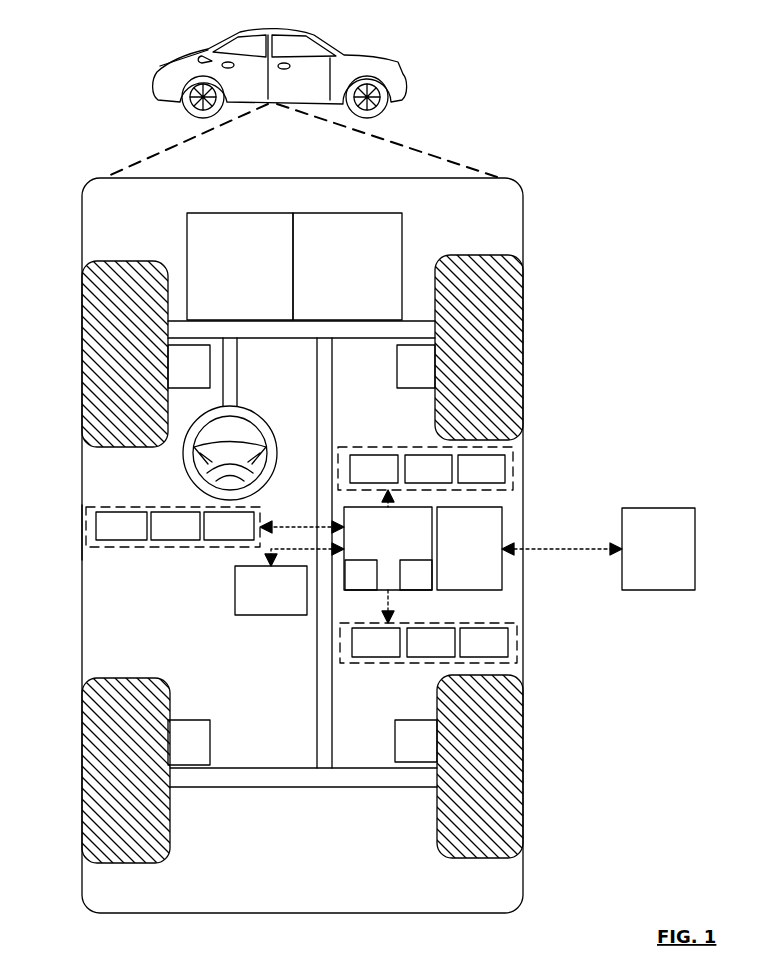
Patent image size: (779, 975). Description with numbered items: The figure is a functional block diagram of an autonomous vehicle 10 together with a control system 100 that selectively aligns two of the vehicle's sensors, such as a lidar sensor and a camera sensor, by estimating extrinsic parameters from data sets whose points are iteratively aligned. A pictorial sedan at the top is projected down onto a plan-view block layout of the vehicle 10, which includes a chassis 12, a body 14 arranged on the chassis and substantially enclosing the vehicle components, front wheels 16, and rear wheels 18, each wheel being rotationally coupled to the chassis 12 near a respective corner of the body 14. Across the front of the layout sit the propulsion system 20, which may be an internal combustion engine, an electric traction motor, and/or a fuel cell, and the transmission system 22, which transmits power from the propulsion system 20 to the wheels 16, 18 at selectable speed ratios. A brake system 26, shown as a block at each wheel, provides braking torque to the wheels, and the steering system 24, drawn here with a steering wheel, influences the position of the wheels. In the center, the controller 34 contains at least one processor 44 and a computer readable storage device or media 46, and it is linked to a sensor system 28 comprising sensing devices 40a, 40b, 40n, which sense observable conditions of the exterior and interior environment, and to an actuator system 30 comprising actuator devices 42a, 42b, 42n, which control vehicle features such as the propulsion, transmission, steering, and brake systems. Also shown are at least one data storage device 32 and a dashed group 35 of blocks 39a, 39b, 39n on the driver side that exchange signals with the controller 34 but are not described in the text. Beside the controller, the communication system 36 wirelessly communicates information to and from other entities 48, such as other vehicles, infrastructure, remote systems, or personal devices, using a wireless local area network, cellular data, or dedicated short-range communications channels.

The vehicle 10 is at (158, 88).
The control system 100 is at (549, 188).
The chassis 12 is at (316, 705).
The body 14 is at (82, 530).
The front wheels 16 is at (125, 261).
The rear wheels 18 is at (140, 863).
The propulsion system 20 is at (240, 266).
The transmission system 22 is at (347, 266).
The steering system 24 is at (262, 362).
The brake system 26 is at (302, 555).
The sensor system 28 is at (355, 446).
The actuator system 30 is at (388, 665).
The data storage device 32 is at (271, 590).
The controller 34 is at (388, 548).
The input device group 35 is at (133, 548).
The communication system 36 is at (469, 548).
The input device 39a is at (121, 526).
The input device 39b is at (175, 526).
The input device 39n is at (229, 526).
The sensing device 40a is at (374, 469).
The sensing device 40b is at (428, 469).
The sensing device 40n is at (481, 469).
The actuator device 42a is at (376, 642).
The actuator device 42b is at (431, 642).
The actuator device 42n is at (484, 642).
The processor 44 is at (361, 575).
The computer readable storage device or media 46 is at (416, 575).
The other entities 48 is at (658, 549).